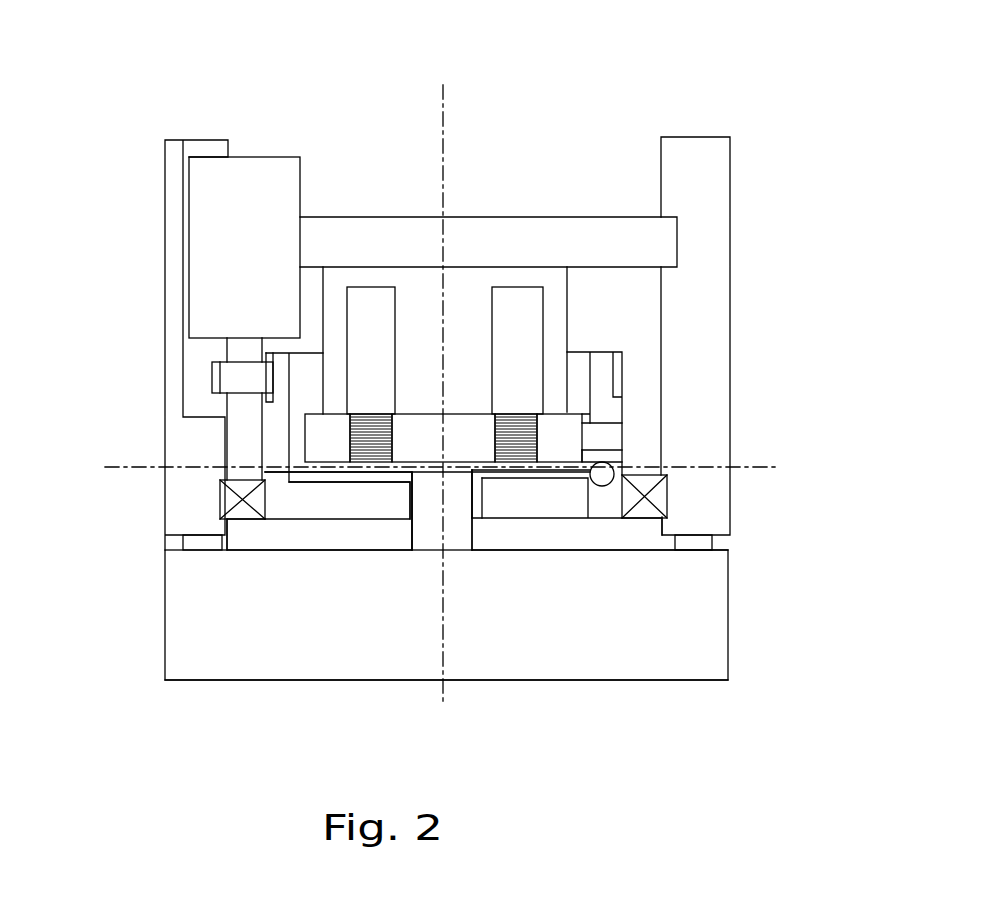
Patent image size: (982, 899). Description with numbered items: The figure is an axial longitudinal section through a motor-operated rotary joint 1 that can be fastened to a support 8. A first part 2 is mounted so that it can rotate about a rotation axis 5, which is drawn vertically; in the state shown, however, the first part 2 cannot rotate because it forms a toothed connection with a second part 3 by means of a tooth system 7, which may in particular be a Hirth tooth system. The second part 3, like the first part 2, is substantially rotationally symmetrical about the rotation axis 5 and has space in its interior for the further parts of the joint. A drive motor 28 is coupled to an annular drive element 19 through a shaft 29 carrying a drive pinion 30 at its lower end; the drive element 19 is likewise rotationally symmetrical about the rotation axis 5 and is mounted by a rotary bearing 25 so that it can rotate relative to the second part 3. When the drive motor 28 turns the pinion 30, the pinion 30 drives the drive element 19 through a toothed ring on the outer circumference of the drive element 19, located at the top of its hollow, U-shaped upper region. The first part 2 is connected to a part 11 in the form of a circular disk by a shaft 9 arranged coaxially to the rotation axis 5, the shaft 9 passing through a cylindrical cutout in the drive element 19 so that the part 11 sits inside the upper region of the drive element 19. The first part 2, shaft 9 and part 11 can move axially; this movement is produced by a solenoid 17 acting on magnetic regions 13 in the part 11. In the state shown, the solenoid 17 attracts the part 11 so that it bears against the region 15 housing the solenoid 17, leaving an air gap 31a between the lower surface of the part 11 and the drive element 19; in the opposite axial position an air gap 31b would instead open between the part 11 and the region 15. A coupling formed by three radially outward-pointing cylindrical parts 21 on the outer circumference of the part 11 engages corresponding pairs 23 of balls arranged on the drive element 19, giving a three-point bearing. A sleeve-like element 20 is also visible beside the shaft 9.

The drive unit 1 is at (549, 92).
The first part 2 is at (712, 630).
The second part 3 is at (712, 182).
The rotation axis 5 is at (445, 695).
The tooth system 7 is at (183, 546).
The support 8 is at (300, 682).
The shaft 9 is at (457, 537).
The part in the form of a circular disk 11 is at (325, 440).
The magnetic regions 13 is at (380, 415).
The region 15 is at (482, 358).
The solenoid 17 is at (352, 312).
The drive element 19 is at (568, 495).
The spacer sleeve 20 is at (477, 502).
The cylindrical parts 21 is at (612, 447).
The pairs of balls 23 is at (603, 487).
The rotary bearing 25 is at (668, 496).
The drive motor 28 is at (200, 193).
The shaft 29 is at (222, 352).
The drive pinion 30 is at (212, 377).
The air gap 31a is at (595, 450).
The air gap 31b is at (553, 427).